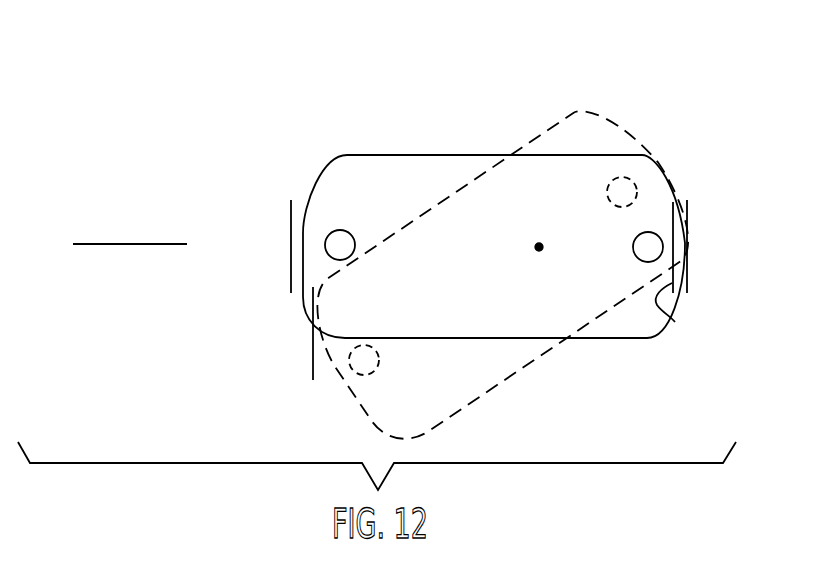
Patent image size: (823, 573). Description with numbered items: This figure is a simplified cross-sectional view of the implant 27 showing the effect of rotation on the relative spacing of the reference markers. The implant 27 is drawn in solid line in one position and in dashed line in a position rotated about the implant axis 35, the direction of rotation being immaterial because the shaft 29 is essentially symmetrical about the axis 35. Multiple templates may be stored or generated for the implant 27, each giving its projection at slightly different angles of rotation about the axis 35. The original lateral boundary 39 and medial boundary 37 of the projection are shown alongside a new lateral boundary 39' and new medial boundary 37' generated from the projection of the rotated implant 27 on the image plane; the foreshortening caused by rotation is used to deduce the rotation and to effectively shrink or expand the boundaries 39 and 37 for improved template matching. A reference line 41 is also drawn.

The implant 27 is at (543, 88).
The shaft 29 is at (660, 166).
The implant axis 35 is at (536, 252).
The medial boundary 37 is at (711, 234).
The new medial boundary 37' is at (692, 320).
The lateral boundary 39 is at (261, 238).
The new lateral boundary 39' is at (275, 333).
The reference line 41 is at (132, 244).